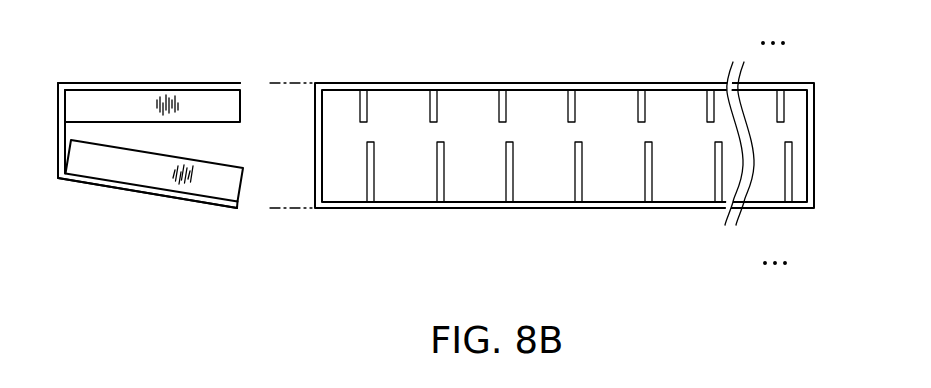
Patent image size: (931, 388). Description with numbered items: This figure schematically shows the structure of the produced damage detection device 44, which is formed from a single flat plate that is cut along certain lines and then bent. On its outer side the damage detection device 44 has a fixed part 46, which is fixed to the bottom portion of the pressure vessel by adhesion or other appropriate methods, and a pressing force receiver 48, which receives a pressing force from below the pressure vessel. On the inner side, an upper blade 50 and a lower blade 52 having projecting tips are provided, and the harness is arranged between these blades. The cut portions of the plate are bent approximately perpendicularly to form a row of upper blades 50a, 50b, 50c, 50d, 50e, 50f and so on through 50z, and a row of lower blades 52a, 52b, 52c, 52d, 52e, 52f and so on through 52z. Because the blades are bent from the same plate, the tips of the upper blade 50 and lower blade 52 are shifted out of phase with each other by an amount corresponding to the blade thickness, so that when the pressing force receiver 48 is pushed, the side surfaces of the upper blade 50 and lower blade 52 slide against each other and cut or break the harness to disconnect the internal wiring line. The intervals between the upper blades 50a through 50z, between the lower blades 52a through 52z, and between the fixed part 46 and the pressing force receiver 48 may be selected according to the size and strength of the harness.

The damage detection device 44 is at (221, 72).
The fixed part 46 is at (143, 83).
The pressing force receiver 48 is at (195, 203).
The upper blade 50 is at (223, 103).
The lower blade 52 is at (233, 187).
The upper blade 50a is at (368, 104).
The upper blade 50b is at (438, 104).
The upper blade 50c is at (507, 104).
The upper blade 50d is at (576, 104).
The upper blade 50e is at (646, 104).
The upper blade 50f is at (715, 104).
The upper blade 50z is at (785, 104).
The lower blade 52a is at (374, 172).
The lower blade 52b is at (444, 172).
The lower blade 52c is at (513, 172).
The lower blade 52d is at (582, 172).
The lower blade 52e is at (652, 172).
The lower blade 52f is at (722, 172).
The lower blade 52z is at (792, 172).